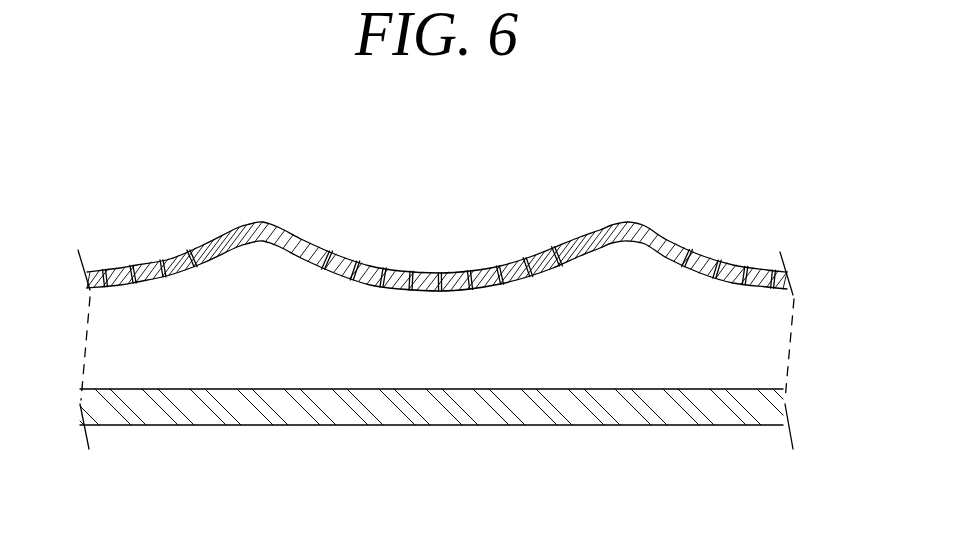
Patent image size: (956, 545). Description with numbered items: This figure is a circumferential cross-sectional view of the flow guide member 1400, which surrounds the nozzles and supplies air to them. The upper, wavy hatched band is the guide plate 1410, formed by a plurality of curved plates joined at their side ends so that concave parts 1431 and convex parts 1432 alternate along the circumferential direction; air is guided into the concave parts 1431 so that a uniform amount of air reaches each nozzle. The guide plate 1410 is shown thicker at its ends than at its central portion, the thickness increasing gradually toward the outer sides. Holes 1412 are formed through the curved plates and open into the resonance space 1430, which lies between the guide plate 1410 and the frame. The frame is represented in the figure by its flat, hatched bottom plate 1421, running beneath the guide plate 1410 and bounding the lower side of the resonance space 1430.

The flow guide member 1400 is at (538, 173).
The guide plate 1410 is at (338, 252).
The holes 1412 is at (440, 273).
The bottom plate 1421 is at (440, 425).
The resonance space 1430 is at (280, 317).
The concave parts 1431 is at (484, 270).
The convex parts 1432 is at (622, 222).